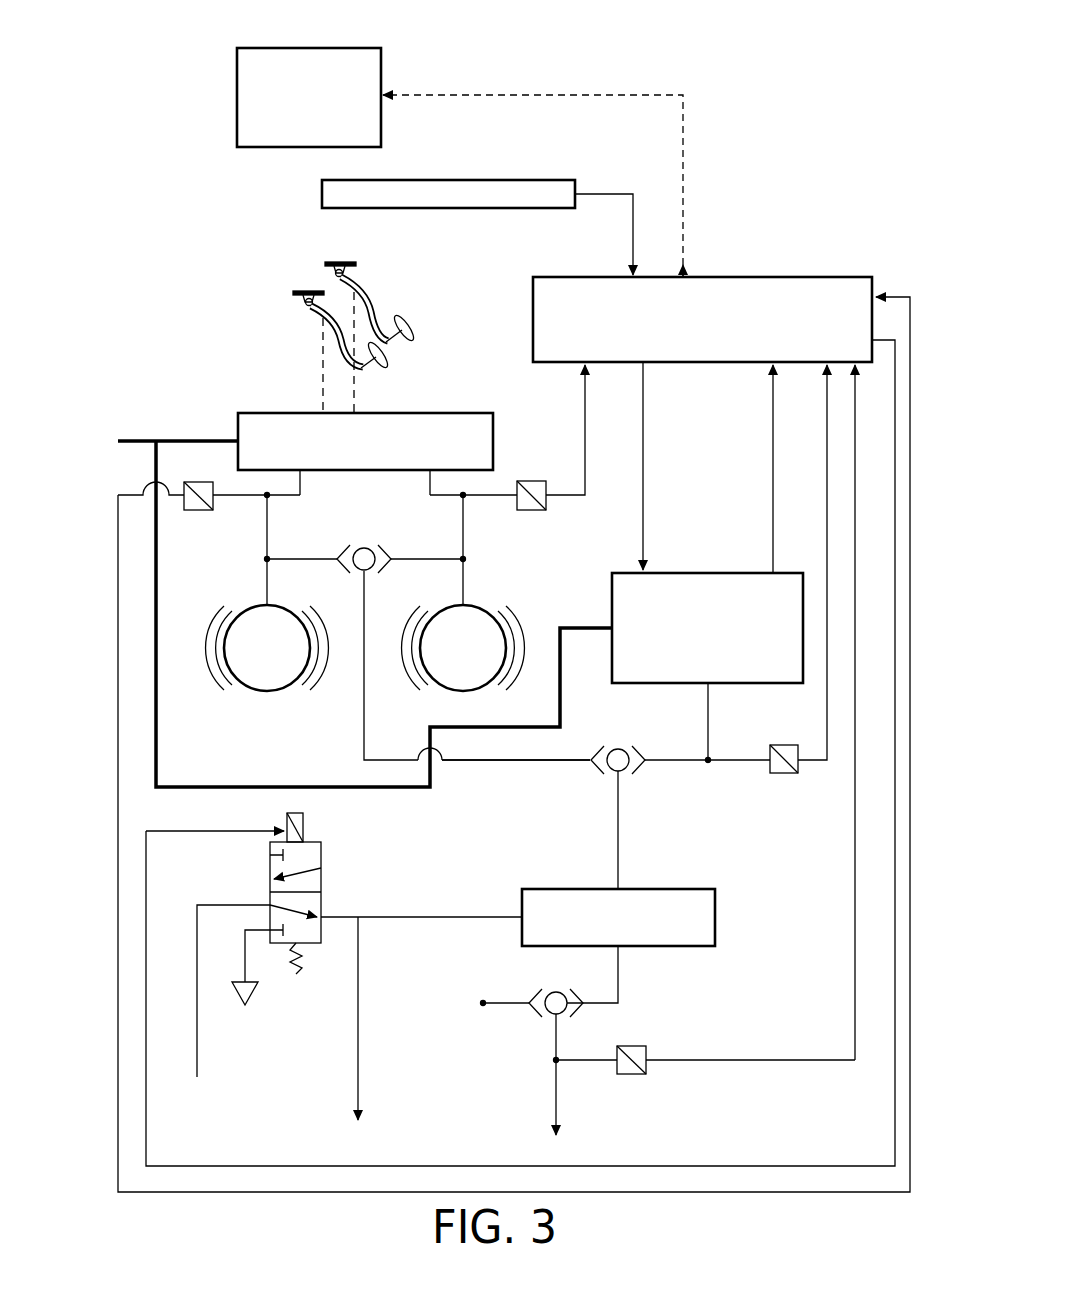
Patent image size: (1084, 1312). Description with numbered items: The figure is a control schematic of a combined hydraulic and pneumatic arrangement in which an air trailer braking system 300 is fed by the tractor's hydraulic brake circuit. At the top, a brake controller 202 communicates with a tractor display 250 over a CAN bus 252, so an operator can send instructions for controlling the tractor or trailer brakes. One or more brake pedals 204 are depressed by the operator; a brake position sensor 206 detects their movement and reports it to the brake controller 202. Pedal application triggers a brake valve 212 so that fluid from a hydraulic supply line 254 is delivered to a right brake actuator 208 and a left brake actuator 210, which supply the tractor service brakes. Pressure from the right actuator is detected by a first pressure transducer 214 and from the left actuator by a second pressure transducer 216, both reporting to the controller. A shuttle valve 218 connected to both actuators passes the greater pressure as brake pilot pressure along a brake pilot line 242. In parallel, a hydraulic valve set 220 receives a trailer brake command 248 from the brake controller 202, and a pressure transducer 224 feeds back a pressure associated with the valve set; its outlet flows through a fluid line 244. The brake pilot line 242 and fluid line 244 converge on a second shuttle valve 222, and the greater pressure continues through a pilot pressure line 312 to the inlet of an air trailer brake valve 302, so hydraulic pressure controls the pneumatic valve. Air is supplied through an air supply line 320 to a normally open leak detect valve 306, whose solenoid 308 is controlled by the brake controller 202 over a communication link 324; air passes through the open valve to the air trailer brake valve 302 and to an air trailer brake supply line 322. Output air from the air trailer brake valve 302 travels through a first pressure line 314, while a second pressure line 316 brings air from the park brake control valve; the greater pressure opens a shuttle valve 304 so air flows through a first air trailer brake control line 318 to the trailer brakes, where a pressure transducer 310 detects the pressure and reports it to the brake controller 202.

The air trailer braking system 300 is at (807, 88).
The tractor display 250 is at (268, 48).
The CAN bus 252 is at (434, 95).
The brake position sensor 206 is at (526, 180).
The brake controller 202 is at (765, 277).
The brake pedals 204 is at (325, 264).
The brake valve 212 is at (433, 413).
The hydraulic supply line 254 is at (132, 441).
The first pressure transducer 214 is at (200, 512).
The second pressure transducer 216 is at (530, 481).
The shuttle valve 218 is at (364, 547).
The right brake actuator 208 is at (268, 692).
The left brake actuator 210 is at (473, 606).
The trailer brake command 248 is at (643, 446).
The hydraulic valve set 220 is at (708, 573).
The second shuttle valve 222 is at (612, 752).
The brake pilot line 242 is at (494, 765).
The fluid line 244 is at (672, 765).
The pressure transducer 224 is at (786, 775).
The leak detect valve 306 is at (346, 870).
The solenoid 308 is at (304, 826).
The communication link 324 is at (216, 830).
The air supply line 320 is at (197, 1050).
The air trailer brake supply line 322 is at (358, 1077).
The air trailer brake valve 302 is at (715, 918).
The pilot pressure line 312 is at (618, 840).
The first pressure line 314 is at (618, 975).
The shuttle valve 304 is at (547, 992).
The second pressure line 316 is at (490, 1010).
The first air trailer brake control line 318 is at (556, 1097).
The pressure transducer 310 is at (632, 1076).